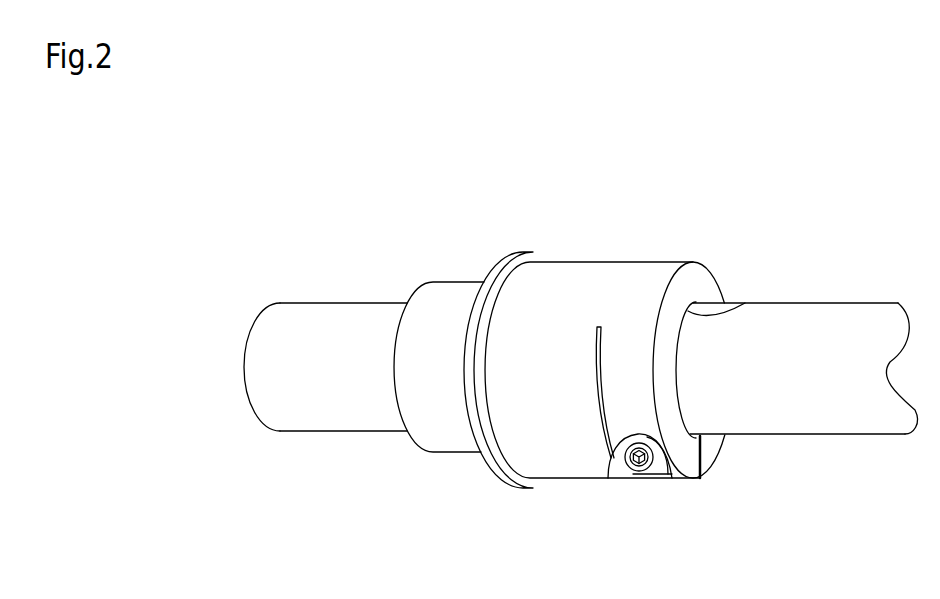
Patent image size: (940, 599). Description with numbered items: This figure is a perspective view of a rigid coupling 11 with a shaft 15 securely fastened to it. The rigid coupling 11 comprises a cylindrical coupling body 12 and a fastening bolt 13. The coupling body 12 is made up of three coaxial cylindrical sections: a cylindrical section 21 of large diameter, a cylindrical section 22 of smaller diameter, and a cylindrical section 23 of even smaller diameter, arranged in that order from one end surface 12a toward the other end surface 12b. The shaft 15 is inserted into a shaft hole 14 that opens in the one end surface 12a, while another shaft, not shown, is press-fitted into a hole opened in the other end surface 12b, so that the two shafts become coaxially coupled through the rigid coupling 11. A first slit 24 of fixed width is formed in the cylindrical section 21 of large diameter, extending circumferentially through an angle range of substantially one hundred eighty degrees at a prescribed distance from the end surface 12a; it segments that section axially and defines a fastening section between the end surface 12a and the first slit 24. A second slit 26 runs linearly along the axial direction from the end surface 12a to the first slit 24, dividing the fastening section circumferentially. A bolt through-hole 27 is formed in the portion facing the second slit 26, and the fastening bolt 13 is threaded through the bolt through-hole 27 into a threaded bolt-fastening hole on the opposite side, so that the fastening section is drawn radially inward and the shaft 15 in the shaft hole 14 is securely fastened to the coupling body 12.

The rigid coupling 11 is at (634, 208).
The coupling body 12 is at (605, 170).
The one end surface 12a is at (699, 284).
The other end surface 12b is at (252, 410).
The fastening bolt 13 is at (614, 461).
The shaft hole 14 is at (745, 300).
The shaft 15 is at (857, 450).
The cylindrical section of large diameter 21 is at (568, 273).
The cylindrical section of smaller diameter 22 is at (458, 282).
The cylindrical section of even smaller diameter 23 is at (353, 300).
The first slit 24 is at (597, 425).
The second slit 26 is at (705, 470).
The bolt through-hole 27 is at (665, 483).